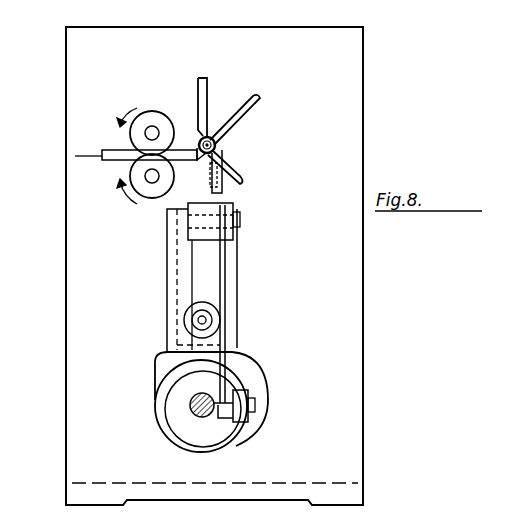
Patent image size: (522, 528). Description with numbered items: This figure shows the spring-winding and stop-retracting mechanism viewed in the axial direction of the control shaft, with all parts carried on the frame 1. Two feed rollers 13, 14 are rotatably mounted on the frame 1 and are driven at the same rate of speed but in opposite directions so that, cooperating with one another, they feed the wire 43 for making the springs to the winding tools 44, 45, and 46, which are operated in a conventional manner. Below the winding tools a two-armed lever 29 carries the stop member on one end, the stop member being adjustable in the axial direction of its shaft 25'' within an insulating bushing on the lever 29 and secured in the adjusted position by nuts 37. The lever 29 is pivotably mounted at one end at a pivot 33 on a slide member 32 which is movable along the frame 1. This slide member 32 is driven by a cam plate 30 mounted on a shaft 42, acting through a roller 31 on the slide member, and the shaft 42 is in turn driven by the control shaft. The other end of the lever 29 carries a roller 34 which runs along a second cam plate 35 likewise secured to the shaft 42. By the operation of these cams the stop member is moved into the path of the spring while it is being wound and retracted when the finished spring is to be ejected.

The frame 1 is at (355, 85).
The feed roller 13 is at (170, 178).
The second feed roller 14 is at (157, 116).
The shaft of stop member 25'' is at (220, 123).
The two-armed lever 29 is at (226, 289).
The cam plate 30 is at (263, 388).
The roller 31 is at (186, 316).
The slide member 32 is at (200, 277).
The pivot 33 is at (241, 222).
The roller 34 is at (243, 423).
The cam plate 35 is at (219, 437).
The nuts 37 is at (216, 144).
The shaft 42 is at (192, 411).
The wire 43 is at (80, 153).
The winding tool 44 is at (208, 79).
The winding tool 45 is at (257, 104).
The winding tool 46 is at (243, 170).